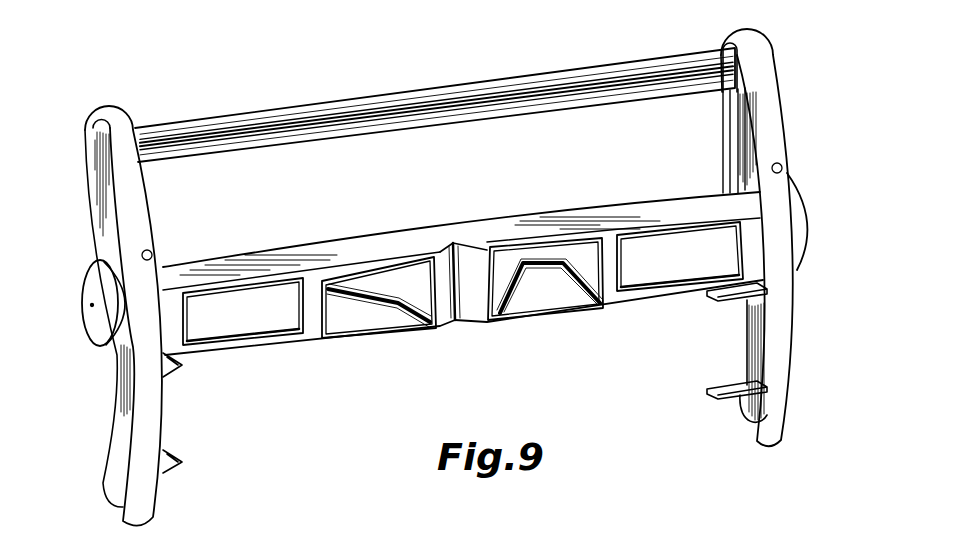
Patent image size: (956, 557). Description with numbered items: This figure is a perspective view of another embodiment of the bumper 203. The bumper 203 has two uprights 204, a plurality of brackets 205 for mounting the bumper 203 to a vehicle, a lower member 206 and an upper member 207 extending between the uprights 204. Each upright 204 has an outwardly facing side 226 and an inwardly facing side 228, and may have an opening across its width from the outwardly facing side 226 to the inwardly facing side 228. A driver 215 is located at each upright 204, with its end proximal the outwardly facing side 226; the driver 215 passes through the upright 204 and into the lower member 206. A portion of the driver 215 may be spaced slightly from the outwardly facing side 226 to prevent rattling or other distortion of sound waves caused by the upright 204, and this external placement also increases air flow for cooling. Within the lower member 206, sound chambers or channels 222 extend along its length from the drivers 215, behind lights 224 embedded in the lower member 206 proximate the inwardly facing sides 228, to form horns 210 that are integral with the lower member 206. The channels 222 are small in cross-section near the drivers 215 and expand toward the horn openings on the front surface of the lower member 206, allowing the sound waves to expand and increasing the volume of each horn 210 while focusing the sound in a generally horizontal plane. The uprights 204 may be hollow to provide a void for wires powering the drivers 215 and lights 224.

The bumper 203 is at (445, 272).
The upright 204 is at (157, 483).
The bracket 205 is at (170, 452).
The lower member 206 is at (535, 222).
The upper member 207 is at (355, 103).
The horn 210 is at (393, 325).
The driver 215 is at (92, 310).
The channel 222 is at (344, 307).
The light 224 is at (222, 320).
The outwardly facing side 226 is at (116, 233).
The inwardly facing side 228 is at (746, 146).